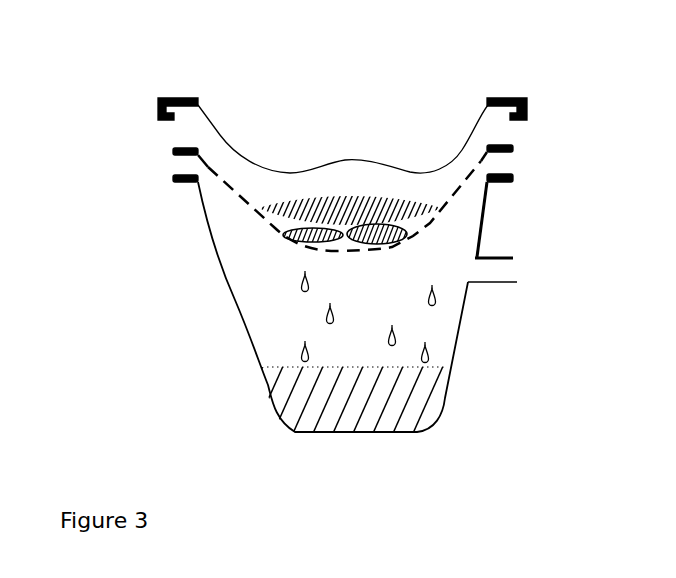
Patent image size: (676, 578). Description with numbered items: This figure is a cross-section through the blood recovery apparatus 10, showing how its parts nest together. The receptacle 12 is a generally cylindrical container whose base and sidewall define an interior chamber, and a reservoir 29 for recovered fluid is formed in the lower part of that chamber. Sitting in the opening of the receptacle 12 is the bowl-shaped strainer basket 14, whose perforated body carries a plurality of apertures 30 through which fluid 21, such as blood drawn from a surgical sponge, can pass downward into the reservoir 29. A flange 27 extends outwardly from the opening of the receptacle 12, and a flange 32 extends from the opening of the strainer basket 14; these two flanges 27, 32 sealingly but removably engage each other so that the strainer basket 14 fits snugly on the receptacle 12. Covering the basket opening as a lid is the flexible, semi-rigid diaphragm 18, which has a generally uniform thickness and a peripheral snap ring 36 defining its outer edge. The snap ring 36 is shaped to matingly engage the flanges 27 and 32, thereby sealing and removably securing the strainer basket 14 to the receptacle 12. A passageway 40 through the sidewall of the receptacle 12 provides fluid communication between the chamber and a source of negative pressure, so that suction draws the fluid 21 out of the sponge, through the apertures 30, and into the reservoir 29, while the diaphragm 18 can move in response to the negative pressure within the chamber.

The blood recovery apparatus 10 is at (360, 484).
The receptacle 12 is at (237, 313).
The strainer basket 14 is at (243, 207).
The diaphragm 18 is at (219, 134).
The fluid 21 is at (395, 340).
The flange 27 is at (173, 178).
The reservoir 29 is at (430, 396).
The apertures 30 is at (465, 188).
The flange 32 is at (173, 152).
The peripheral snap ring 36 is at (528, 105).
The passageway 40 is at (510, 268).